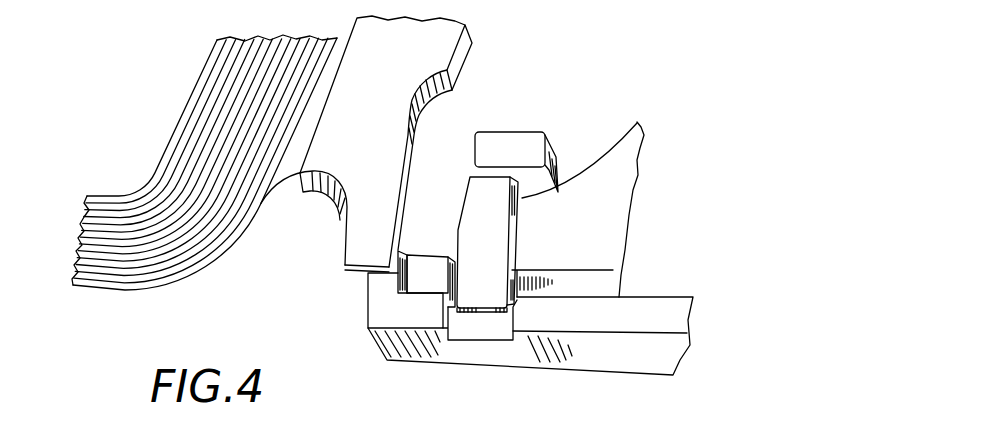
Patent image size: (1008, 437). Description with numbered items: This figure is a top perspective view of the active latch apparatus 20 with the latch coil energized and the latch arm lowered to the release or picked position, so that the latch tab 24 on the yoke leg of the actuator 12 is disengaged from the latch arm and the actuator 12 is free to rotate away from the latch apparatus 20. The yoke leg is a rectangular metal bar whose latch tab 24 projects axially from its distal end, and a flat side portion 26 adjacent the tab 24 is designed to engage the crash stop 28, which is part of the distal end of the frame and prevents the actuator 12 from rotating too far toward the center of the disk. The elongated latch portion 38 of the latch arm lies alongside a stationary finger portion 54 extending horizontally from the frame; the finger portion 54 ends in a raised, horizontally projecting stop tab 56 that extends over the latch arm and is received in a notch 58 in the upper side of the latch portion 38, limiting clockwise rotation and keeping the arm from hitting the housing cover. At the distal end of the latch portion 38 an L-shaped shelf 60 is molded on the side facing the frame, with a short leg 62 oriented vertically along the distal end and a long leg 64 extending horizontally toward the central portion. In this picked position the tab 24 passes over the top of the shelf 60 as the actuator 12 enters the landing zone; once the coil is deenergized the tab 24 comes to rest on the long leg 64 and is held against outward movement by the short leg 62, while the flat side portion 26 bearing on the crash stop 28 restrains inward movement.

The actuator 12 is at (142, 300).
The latch apparatus 20 is at (648, 152).
The latch tab 24 is at (344, 250).
The flat side portion 26 is at (404, 172).
The crash stop 28 is at (516, 146).
The latch portion 38 is at (380, 345).
The finger portion 54 is at (610, 225).
The stop tab 56 is at (491, 273).
The notch 58 is at (478, 340).
The L-shaped shelf 60 is at (403, 248).
The short leg 62 is at (385, 282).
The long leg 64 is at (428, 268).